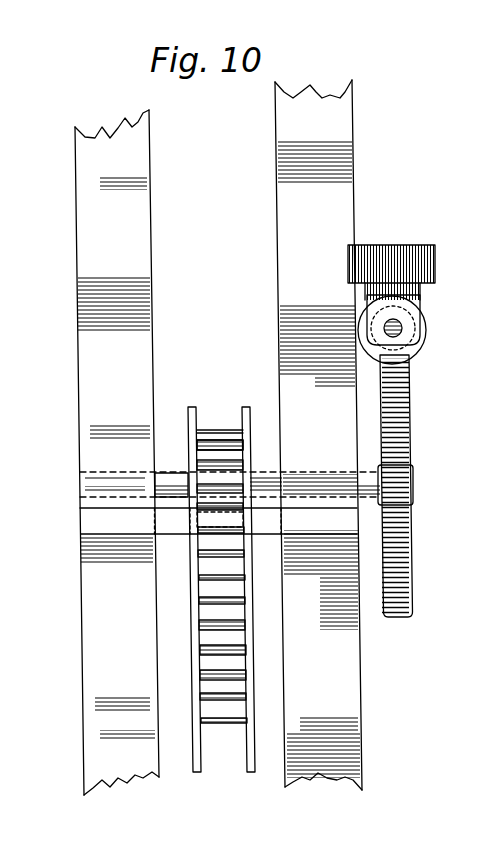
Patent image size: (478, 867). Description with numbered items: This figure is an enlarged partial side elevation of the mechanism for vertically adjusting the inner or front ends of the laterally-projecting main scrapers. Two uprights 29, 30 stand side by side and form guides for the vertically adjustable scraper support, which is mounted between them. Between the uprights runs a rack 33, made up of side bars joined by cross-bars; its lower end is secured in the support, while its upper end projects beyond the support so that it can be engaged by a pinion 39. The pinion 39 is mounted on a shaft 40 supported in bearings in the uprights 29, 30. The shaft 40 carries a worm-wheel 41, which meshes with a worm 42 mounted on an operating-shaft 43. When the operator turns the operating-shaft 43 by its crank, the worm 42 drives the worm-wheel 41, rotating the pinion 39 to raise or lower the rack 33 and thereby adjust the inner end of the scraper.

The upright 29 is at (150, 251).
The upright 30 is at (283, 280).
The rack 33 is at (250, 633).
The pinion 39 is at (210, 440).
The shaft 40 is at (260, 478).
The worm-wheel 41 is at (411, 535).
The worm 42 is at (426, 338).
The operating-shaft 43 is at (402, 325).